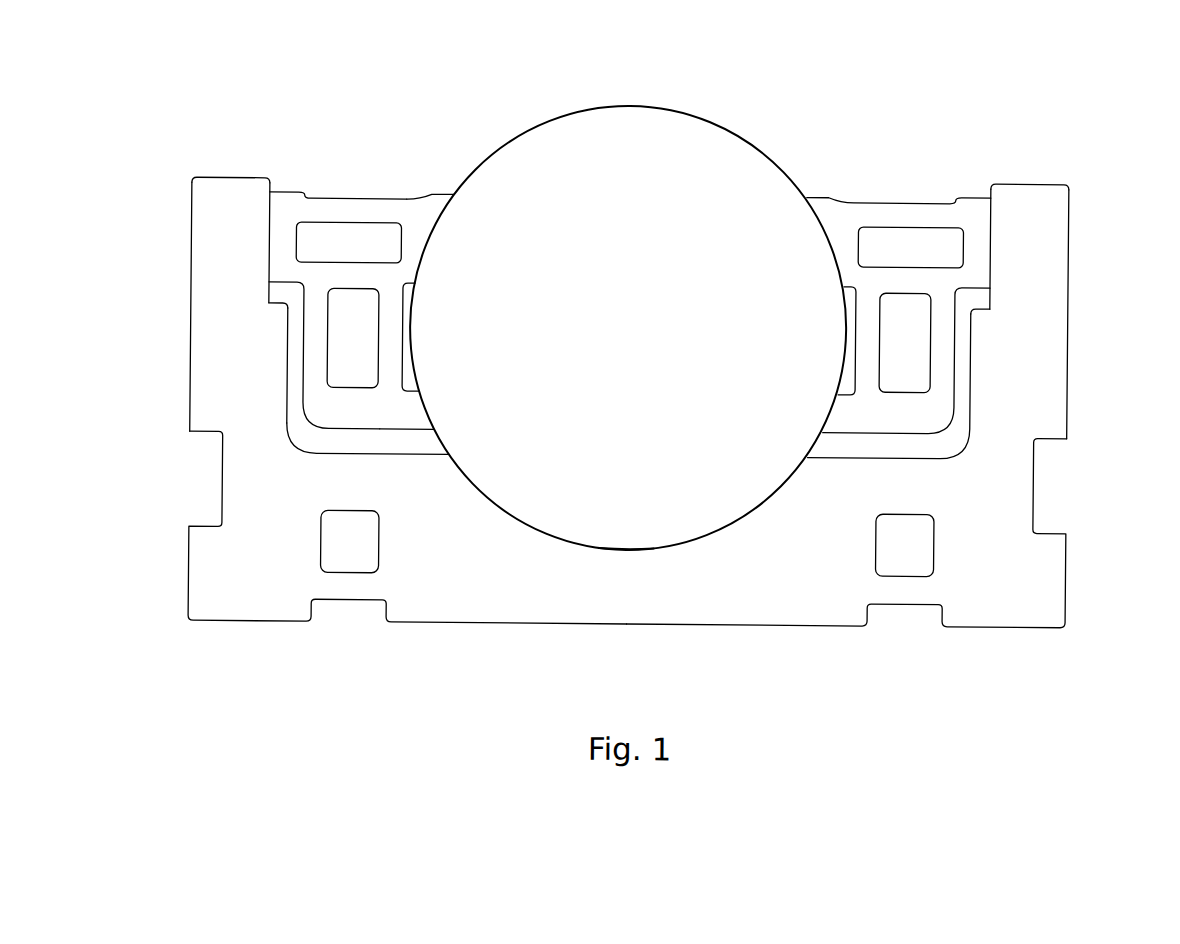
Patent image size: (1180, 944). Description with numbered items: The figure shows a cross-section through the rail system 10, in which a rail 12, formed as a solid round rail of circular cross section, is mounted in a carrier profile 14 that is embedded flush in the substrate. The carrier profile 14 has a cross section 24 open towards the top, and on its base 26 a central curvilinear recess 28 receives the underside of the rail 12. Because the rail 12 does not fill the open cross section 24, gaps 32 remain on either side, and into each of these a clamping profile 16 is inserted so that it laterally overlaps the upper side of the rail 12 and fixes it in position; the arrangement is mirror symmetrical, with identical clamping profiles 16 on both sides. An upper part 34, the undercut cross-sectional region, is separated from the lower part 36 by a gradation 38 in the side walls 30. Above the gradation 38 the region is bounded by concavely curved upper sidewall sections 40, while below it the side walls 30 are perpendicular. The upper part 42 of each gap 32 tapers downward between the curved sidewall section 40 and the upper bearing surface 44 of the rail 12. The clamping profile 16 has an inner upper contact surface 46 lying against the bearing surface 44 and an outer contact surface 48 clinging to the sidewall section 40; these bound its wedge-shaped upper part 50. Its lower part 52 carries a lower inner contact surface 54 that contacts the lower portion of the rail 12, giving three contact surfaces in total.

The rail system 10 is at (167, 94).
The rail 12 is at (588, 132).
The carrier profile 14 is at (181, 561).
The clamping profile 16 is at (361, 199).
The cross section 24 is at (830, 185).
The base 26 is at (838, 455).
The curvilinear recess 28 is at (659, 552).
The side walls 30 is at (228, 344).
The gaps 32 is at (293, 386).
The upper part (undercut cross-sectional region) 34 is at (931, 192).
The lower part 36 is at (290, 413).
The gradation 38 is at (269, 306).
The upper sidewall sections 40 is at (262, 235).
The outer contact surface 48 is at (266, 231).
The upper part of the clamping profile 50 is at (281, 252).
The upper part of the gap 42 is at (382, 239).
The upper bearing surface 44 is at (432, 234).
The inner upper contact surface 46 is at (430, 227).
The lower part of the clamping profile 52 is at (363, 417).
The lower inner contact surface 54 is at (422, 417).